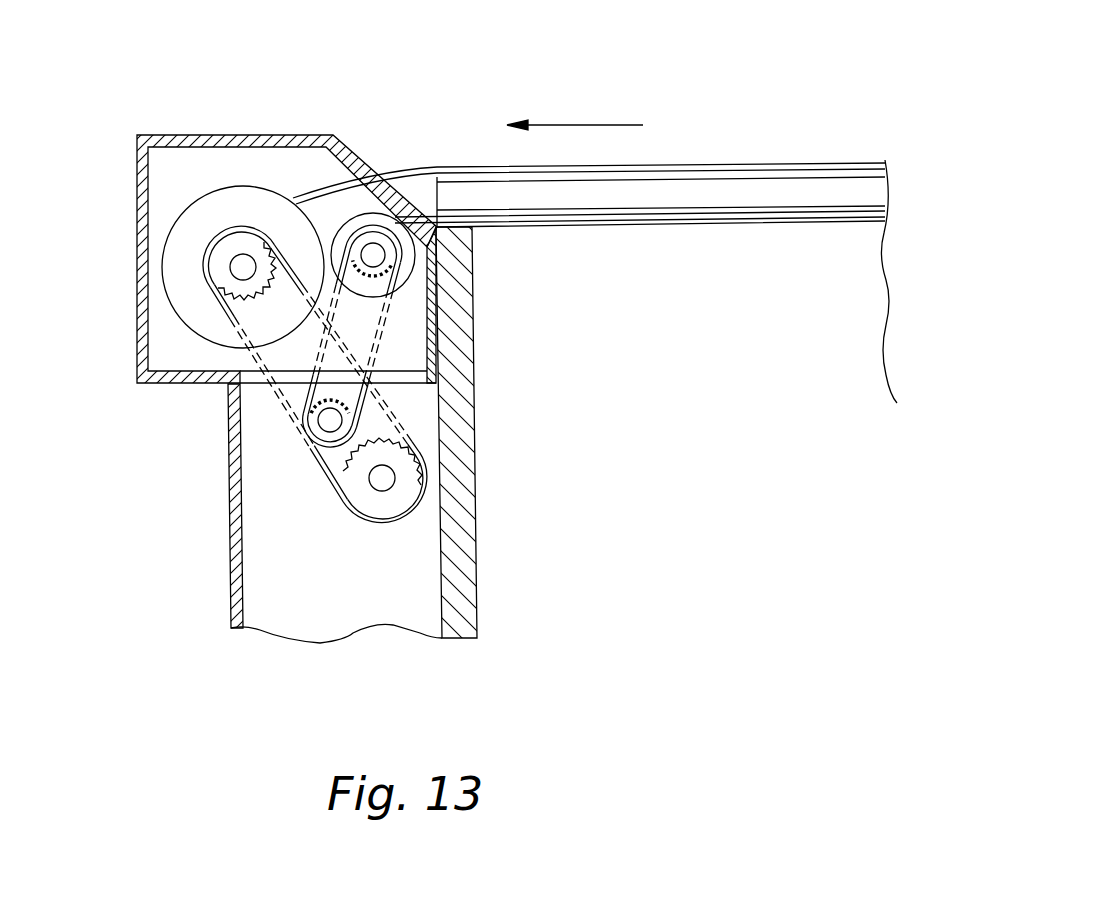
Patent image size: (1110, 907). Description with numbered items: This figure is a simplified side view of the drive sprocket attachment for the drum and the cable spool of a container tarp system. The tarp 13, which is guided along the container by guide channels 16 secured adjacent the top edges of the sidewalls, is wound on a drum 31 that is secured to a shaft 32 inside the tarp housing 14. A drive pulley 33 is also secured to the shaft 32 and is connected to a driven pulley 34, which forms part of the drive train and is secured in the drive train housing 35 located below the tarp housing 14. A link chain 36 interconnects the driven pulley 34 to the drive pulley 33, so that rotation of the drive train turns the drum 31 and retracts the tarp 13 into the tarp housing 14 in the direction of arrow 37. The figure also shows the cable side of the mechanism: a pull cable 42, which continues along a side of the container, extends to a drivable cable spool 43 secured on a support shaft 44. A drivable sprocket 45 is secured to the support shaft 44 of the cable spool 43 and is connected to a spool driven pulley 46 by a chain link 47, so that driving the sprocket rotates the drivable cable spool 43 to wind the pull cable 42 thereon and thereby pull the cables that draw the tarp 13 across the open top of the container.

The tarp 13 is at (690, 165).
The tarp housing 14 is at (137, 243).
The guide channels 16 is at (779, 177).
The drum 31 is at (187, 267).
The shaft 32 is at (220, 294).
The drive pulley 33 is at (240, 242).
The driven pulley 34 is at (390, 503).
The drive train housing 35 is at (232, 510).
The link chain 36 is at (320, 458).
The arrow 37 is at (588, 123).
The pull cable 42 is at (752, 220).
The drivable cable spool 43 is at (368, 294).
The support shaft 44 is at (378, 257).
The drivable sprocket 45 is at (370, 272).
The spool driven pulley 46 is at (302, 418).
The chain link 47 is at (328, 418).